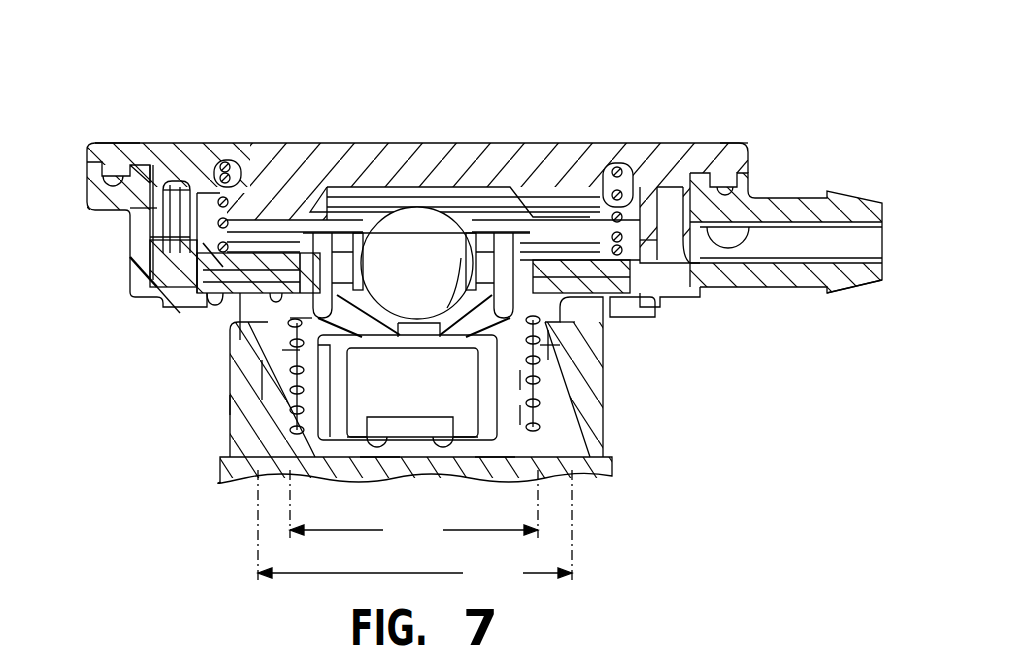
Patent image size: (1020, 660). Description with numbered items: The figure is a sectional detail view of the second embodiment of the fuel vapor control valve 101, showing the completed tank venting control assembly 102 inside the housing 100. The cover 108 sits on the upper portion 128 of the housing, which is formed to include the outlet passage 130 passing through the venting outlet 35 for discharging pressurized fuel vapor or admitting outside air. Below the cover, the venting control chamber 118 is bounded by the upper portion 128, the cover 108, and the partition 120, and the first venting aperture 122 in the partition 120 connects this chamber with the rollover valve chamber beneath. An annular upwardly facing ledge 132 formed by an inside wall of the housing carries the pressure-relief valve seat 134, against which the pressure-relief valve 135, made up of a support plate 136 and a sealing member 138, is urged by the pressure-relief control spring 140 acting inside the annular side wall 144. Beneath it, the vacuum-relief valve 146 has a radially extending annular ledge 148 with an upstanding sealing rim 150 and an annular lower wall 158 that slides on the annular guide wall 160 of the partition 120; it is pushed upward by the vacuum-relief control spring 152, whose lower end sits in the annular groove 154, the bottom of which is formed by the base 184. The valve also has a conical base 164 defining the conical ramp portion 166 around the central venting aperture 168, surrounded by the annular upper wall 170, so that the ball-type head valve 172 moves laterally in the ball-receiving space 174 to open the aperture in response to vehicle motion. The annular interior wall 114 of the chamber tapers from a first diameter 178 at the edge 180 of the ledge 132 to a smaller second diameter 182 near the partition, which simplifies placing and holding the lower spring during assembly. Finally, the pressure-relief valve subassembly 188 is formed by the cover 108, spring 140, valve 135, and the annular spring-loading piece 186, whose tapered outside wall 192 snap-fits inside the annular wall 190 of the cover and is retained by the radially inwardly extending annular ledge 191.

The venting outlet 35 is at (858, 299).
The housing 100 is at (229, 440).
The fuel vapor control valve 101 is at (119, 79).
The venting control assembly 102 is at (262, 378).
The cover 108 is at (538, 149).
The annular interior wall 114 is at (278, 368).
The venting control chamber 118 is at (553, 358).
The partition 120 is at (495, 468).
The first venting aperture 122 is at (380, 462).
The upper portion 128 is at (229, 404).
The outlet passage 130 is at (750, 230).
The ledge 132 is at (594, 255).
The pressure-relief valve seat 134 is at (305, 322).
The pressure-relief valve 135 is at (630, 226).
The support plate 136 is at (175, 245).
The sealing member 138 is at (300, 290).
The pressure-relief control spring 140 is at (222, 162).
The annular side wall 144 is at (176, 186).
The vacuum-relief valve 146 is at (268, 338).
The annular ledge 148 is at (545, 345).
The sealing rim 150 is at (200, 308).
The vacuum-relief control spring 152 is at (530, 415).
The annular groove 154 is at (318, 410).
The annular lower wall 158 is at (525, 378).
The annular guide wall 160 is at (480, 415).
The conical base 164 is at (490, 232).
The conical ramp portion 166 is at (458, 290).
The central venting aperture 168 is at (388, 340).
The annular upper wall 170 is at (312, 195).
The ball-type head valve 172 is at (437, 279).
The ball-receiving space 174 is at (353, 212).
The first diameter 178 is at (415, 529).
The edge 180 is at (572, 325).
The second diameter 182 is at (414, 508).
The base 184 is at (528, 432).
The spring-loading piece 186 is at (158, 148).
The pressure-relief valve subassembly 188 is at (721, 147).
The annular wall 190 is at (173, 210).
The annular ledge 191 is at (165, 293).
The outside wall 192 is at (160, 237).